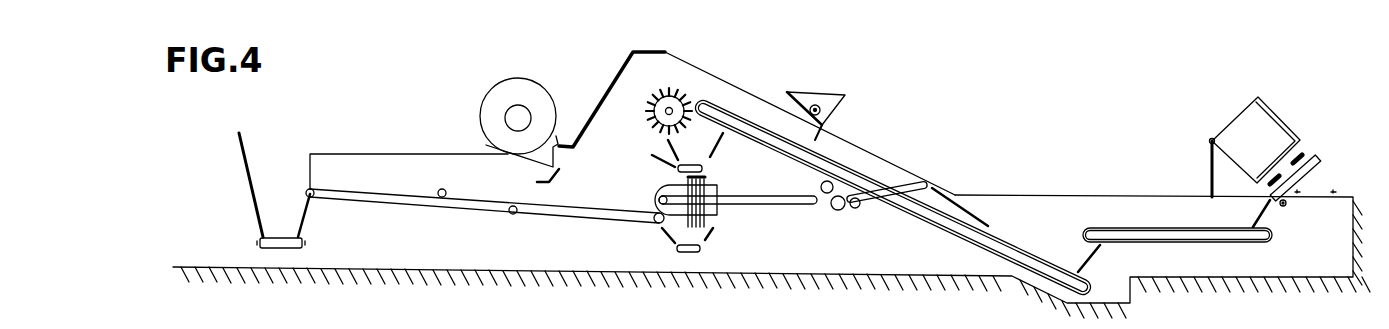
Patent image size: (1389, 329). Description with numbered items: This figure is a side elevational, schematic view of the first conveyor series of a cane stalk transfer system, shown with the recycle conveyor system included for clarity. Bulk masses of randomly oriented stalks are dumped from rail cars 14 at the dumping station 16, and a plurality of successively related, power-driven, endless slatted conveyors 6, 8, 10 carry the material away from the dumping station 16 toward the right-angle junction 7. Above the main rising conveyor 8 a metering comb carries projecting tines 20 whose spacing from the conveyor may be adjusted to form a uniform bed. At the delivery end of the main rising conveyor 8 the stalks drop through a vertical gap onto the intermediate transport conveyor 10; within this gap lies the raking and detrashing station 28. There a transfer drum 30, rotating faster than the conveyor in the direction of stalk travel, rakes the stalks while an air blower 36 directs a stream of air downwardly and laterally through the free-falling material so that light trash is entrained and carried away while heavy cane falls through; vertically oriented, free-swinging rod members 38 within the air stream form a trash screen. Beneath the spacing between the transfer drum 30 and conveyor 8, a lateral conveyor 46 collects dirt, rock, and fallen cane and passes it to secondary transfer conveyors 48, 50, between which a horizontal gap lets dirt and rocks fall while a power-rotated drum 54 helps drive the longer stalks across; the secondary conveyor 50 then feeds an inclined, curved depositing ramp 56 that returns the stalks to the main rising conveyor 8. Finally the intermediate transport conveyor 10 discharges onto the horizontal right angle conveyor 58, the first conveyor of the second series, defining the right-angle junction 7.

The conveyor 6 is at (1212, 243).
The right-angle junction 7 is at (276, 152).
The main rising conveyor 8 is at (1036, 257).
The intermediate transport conveyor 10 is at (455, 189).
The rail cars 14 is at (1278, 114).
The dumping station 16 is at (1192, 143).
The tines 20 is at (846, 96).
The raking and detrashing station 28 is at (735, 80).
The transfer drum 30 is at (653, 117).
The air blower 36 is at (532, 90).
The rod members 38 is at (703, 178).
The lateral conveyor 46 is at (708, 155).
The secondary transfer conveyor 48 is at (765, 197).
The secondary transfer conveyor 50 is at (858, 207).
The power-rotated drum 54 is at (822, 182).
The depositing ramp 56 is at (982, 221).
The right angle conveyor 58 is at (297, 238).